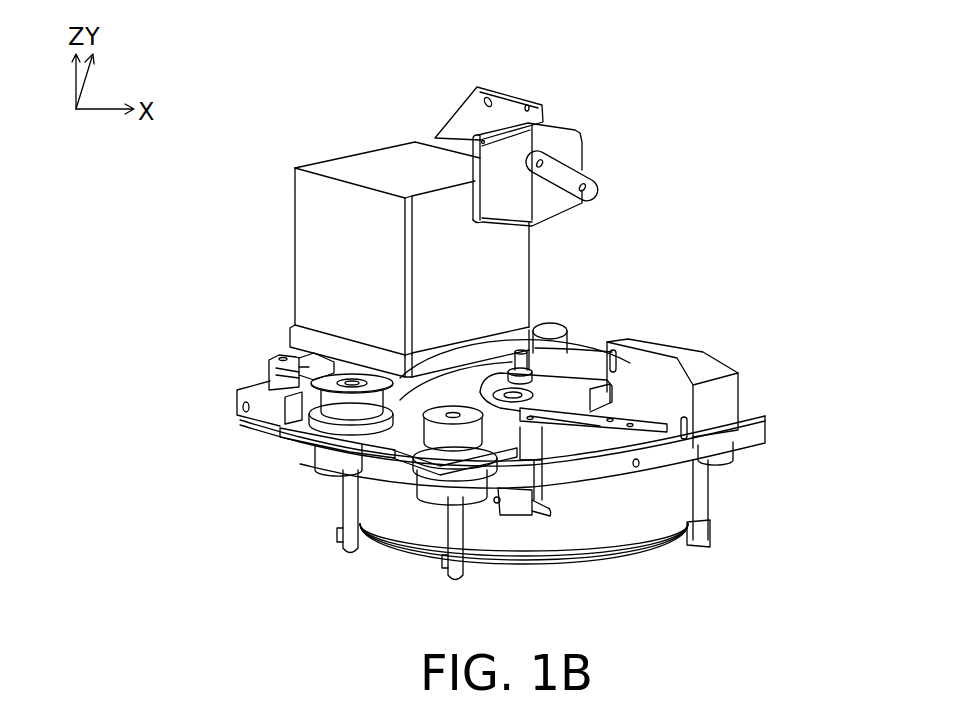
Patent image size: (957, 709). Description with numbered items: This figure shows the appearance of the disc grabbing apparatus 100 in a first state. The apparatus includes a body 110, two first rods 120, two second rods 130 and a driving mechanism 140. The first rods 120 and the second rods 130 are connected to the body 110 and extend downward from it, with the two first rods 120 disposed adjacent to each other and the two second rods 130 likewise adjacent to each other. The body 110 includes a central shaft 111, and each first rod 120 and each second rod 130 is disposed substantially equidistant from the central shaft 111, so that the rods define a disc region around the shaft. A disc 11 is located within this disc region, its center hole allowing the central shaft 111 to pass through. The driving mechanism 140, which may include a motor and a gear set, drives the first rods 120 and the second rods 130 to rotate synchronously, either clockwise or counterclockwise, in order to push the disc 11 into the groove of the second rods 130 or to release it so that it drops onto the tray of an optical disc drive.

The disc grabbing apparatus 100 is at (348, 113).
The body 110 is at (722, 451).
The central shaft 111 is at (515, 507).
The first rod 120 is at (353, 543).
The second rod 130 is at (698, 498).
The driving mechanism 140 is at (566, 330).
The disc 11 is at (647, 553).